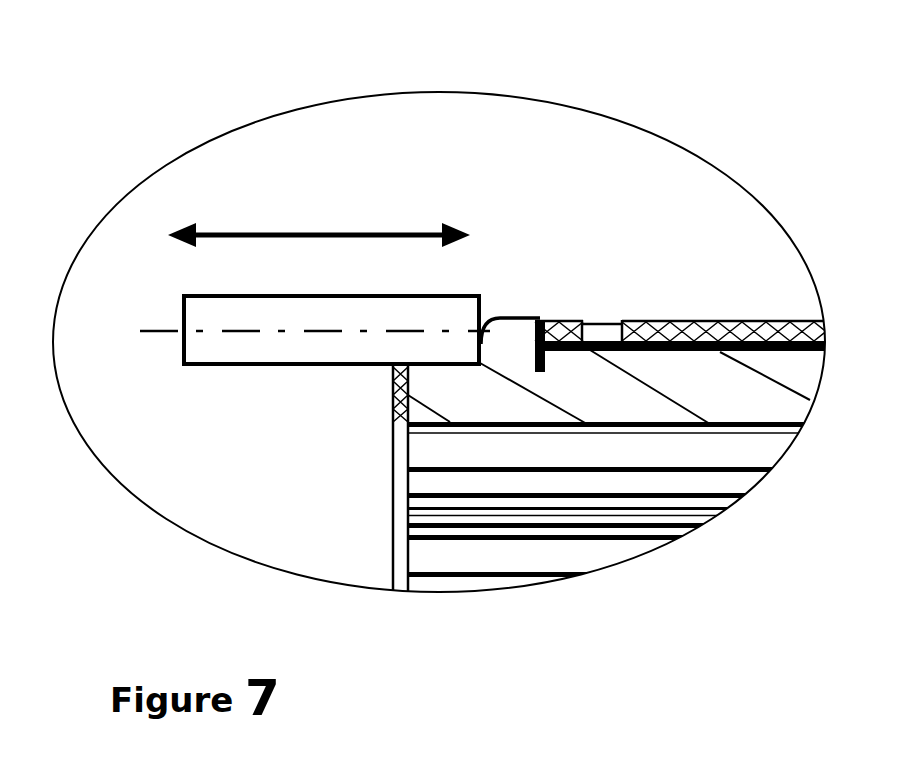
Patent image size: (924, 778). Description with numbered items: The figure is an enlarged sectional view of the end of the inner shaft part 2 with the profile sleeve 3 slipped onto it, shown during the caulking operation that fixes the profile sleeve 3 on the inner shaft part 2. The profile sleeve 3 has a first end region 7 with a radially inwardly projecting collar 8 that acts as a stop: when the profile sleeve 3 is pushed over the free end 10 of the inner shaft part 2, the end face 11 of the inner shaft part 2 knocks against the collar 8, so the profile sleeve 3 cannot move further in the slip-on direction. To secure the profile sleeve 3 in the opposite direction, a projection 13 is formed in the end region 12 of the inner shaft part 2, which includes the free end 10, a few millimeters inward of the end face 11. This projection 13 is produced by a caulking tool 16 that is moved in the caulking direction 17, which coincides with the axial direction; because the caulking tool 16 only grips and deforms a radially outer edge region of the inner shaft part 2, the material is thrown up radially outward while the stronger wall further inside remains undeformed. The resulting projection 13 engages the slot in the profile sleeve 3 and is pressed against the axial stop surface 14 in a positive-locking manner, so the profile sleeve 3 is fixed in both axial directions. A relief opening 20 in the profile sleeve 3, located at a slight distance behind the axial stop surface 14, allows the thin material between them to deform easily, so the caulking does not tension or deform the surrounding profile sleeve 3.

The inner shaft part 2 is at (718, 378).
The profile sleeve 3 is at (722, 328).
The first end region 7 is at (408, 425).
The collar 8 is at (362, 504).
The free end 10 is at (443, 422).
The end face 11 is at (430, 392).
The end region 12 is at (513, 407).
The projection 13 is at (510, 318).
The axial stop surface 14 is at (545, 318).
The caulking tool 16 is at (315, 350).
The caulking direction 17 is at (337, 218).
The relief opening 20 is at (605, 322).